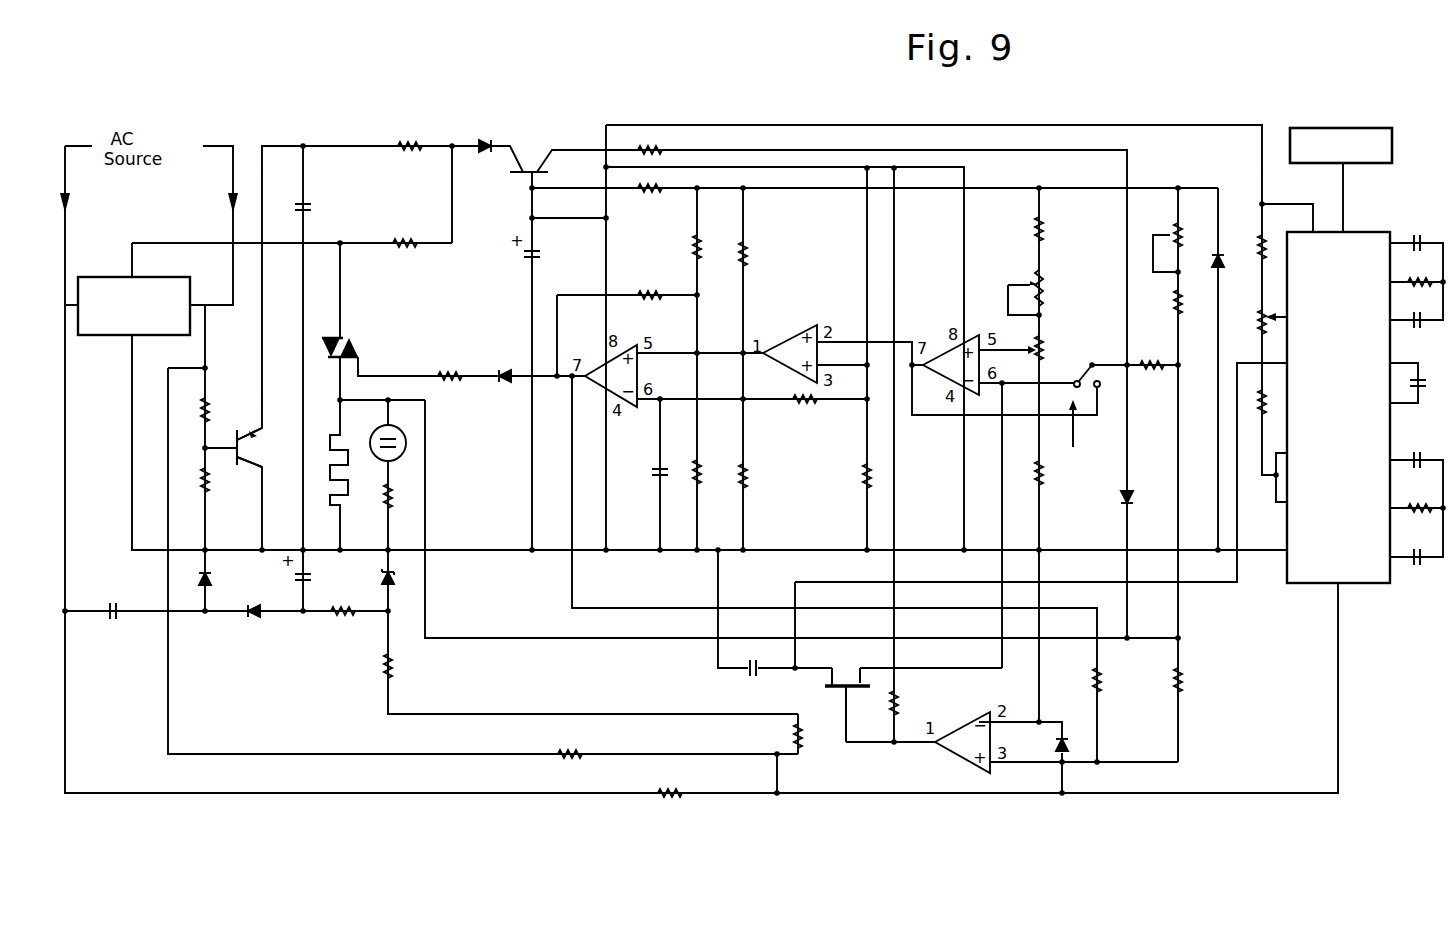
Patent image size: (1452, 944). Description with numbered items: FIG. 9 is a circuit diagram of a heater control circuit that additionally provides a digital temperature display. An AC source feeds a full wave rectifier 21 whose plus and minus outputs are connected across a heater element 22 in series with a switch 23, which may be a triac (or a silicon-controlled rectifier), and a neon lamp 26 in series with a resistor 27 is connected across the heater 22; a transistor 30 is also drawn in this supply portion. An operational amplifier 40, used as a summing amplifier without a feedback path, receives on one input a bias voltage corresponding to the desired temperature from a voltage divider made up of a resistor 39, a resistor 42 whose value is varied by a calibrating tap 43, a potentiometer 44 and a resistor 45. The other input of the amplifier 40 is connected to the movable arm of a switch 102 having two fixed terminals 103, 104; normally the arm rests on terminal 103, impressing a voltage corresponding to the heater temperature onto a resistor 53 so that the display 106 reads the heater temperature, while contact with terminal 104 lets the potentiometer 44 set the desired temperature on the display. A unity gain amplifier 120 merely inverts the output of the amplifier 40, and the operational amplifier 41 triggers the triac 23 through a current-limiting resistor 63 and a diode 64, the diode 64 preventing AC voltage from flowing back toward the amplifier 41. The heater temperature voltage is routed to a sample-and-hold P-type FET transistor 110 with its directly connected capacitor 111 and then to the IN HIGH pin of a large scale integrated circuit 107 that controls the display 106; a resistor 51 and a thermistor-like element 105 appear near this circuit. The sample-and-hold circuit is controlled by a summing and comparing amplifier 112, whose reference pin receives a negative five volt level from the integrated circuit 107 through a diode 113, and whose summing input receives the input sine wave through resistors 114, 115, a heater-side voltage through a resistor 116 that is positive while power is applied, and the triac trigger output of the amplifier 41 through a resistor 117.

The full wave rectifier 21 is at (190, 279).
The heater element 22 is at (333, 446).
The triac 23 is at (347, 338).
The neon lamp 26 is at (406, 447).
The resistor 27 is at (388, 506).
The transistor 30 is at (270, 459).
The resistor 39 is at (1046, 236).
The operational amplifier 40 is at (916, 317).
The operational amplifier 41 is at (566, 341).
The resistor 42 is at (1046, 282).
The tap 43 is at (1024, 285).
The potentiometer 44 is at (1049, 338).
The resistor 45 is at (1040, 460).
The resistor 51 is at (1180, 311).
The resistor 53 is at (1158, 370).
The current-limiting resistor 63 is at (460, 373).
The diode 64 is at (500, 388).
The switch 102 is at (1077, 436).
The fixed terminal 103 is at (1092, 364).
The fixed terminal 104 is at (1100, 387).
The thermistor 105 is at (1180, 225).
The display 106 is at (1392, 133).
The large scale integrated circuit 107 is at (1390, 232).
The transistor 110 is at (828, 686).
The capacitor 111 is at (752, 677).
The amplifier 112 is at (988, 701).
The diode 113 is at (1068, 748).
The resistor 114 is at (583, 751).
The resistor 115 is at (682, 789).
The resistor 116 is at (1182, 690).
The resistor 117 is at (1101, 690).
The unity gain amplifier 120 is at (775, 311).